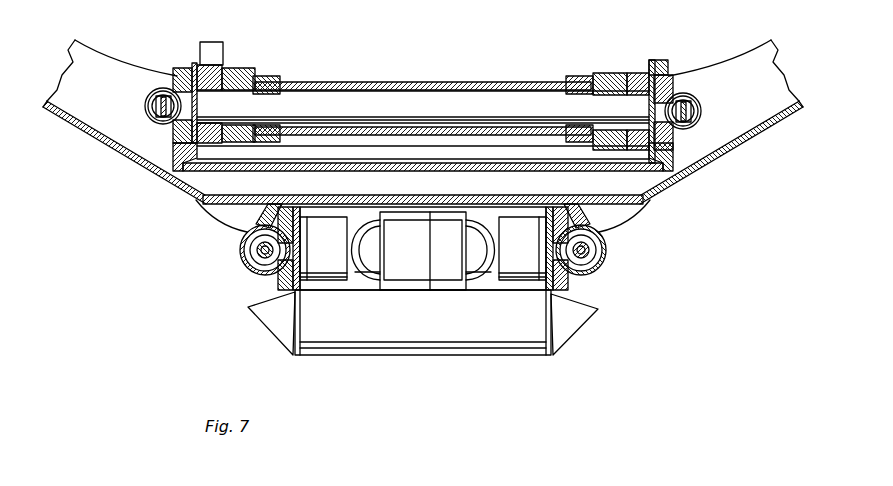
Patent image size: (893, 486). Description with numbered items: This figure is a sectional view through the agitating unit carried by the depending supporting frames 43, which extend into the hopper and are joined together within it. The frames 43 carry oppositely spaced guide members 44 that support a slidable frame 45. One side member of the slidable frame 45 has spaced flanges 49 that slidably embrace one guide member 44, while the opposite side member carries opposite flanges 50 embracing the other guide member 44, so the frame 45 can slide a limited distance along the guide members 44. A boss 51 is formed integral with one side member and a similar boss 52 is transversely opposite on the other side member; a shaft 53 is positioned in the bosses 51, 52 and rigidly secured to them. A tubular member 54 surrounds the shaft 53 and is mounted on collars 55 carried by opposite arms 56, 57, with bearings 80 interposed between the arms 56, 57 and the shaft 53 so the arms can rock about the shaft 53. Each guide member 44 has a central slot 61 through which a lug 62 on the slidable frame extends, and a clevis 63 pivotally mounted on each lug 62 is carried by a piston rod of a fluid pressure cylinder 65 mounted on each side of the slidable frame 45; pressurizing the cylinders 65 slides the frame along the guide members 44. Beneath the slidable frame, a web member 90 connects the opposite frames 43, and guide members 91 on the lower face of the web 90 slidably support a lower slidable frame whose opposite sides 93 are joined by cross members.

The supporting frame 43 is at (83, 65).
The guide member 44 is at (170, 68).
The slidable frame 45 is at (626, 60).
The spaced flanges 49 is at (653, 65).
The opposite flanges 50 is at (192, 65).
The boss 51 is at (640, 72).
The boss 52 is at (213, 65).
The shaft 53 is at (480, 100).
The tubular member 54 is at (443, 82).
The collar 55 is at (265, 80).
The arm 56 is at (240, 67).
The arm 57 is at (610, 72).
The central slot 61 is at (170, 78).
The lug 62 is at (173, 140).
The clevis 63 is at (143, 98).
The fluid pressure cylinder 65 is at (152, 118).
The bearing 80 is at (260, 88).
The web member 90 is at (605, 195).
The guide member 91 is at (280, 280).
The opposite sides 93 is at (302, 235).